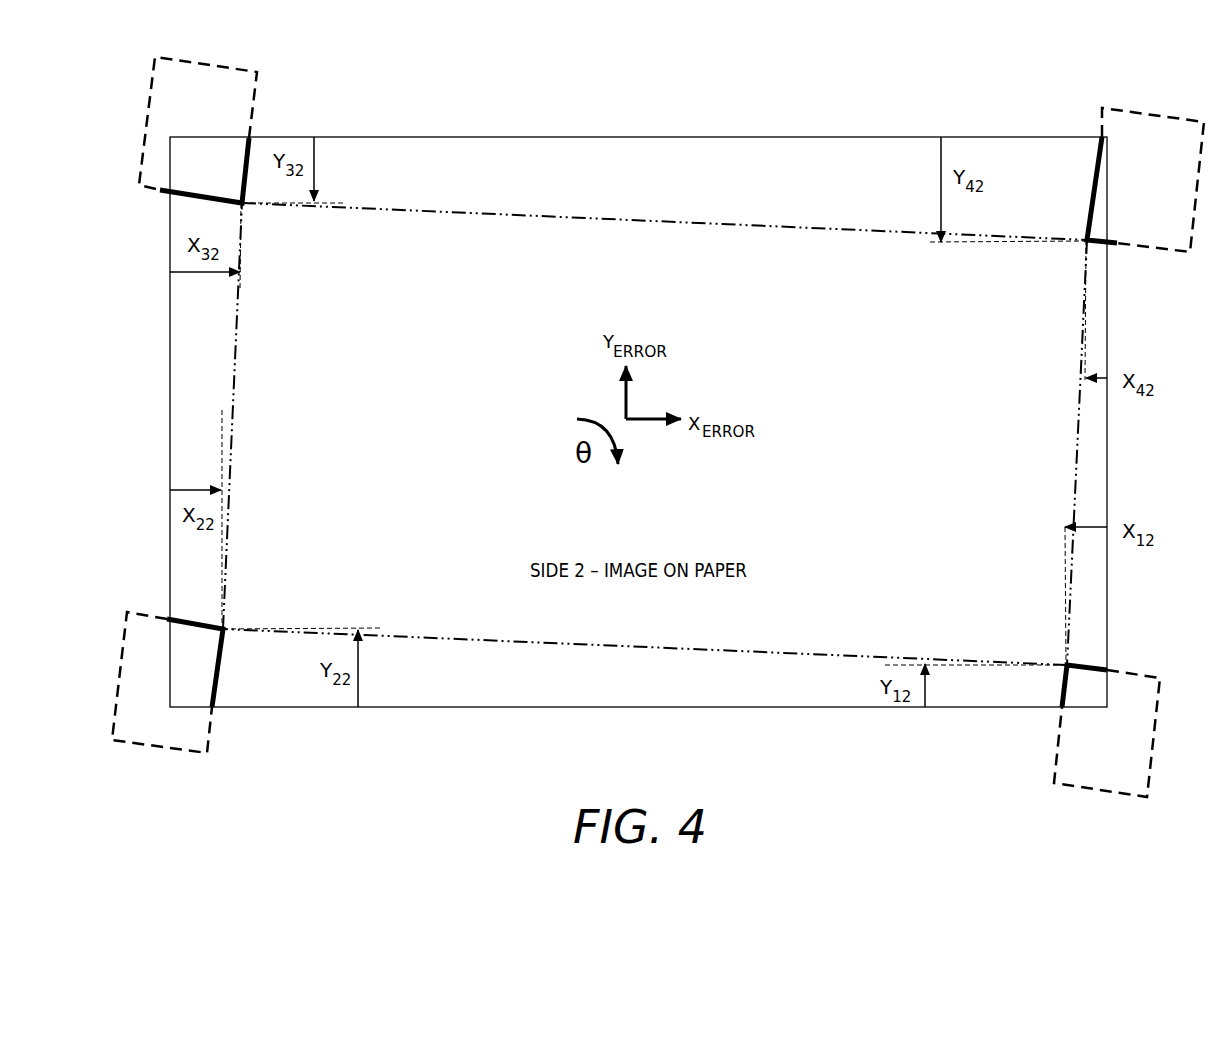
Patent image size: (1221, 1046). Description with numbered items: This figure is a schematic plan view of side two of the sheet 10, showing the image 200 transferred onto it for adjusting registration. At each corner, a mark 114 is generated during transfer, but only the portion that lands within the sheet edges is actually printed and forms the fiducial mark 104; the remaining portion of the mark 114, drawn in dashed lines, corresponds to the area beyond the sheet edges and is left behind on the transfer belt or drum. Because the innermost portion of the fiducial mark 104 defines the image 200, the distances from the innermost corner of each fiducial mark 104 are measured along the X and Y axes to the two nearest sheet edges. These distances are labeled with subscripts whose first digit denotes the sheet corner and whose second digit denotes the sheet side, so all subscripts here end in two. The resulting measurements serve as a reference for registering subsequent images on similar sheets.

The sheet 10 is at (805, 692).
The side 2 image 200 is at (302, 383).
The fiducial mark 104 is at (1063, 683).
The mark 114 is at (1153, 737).